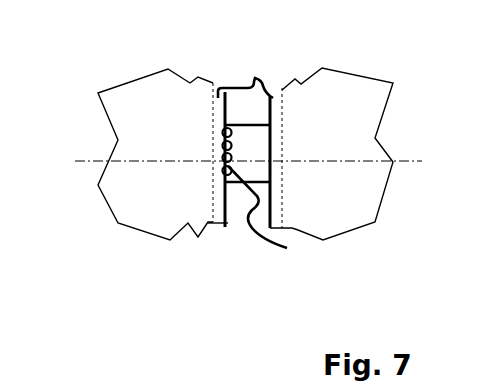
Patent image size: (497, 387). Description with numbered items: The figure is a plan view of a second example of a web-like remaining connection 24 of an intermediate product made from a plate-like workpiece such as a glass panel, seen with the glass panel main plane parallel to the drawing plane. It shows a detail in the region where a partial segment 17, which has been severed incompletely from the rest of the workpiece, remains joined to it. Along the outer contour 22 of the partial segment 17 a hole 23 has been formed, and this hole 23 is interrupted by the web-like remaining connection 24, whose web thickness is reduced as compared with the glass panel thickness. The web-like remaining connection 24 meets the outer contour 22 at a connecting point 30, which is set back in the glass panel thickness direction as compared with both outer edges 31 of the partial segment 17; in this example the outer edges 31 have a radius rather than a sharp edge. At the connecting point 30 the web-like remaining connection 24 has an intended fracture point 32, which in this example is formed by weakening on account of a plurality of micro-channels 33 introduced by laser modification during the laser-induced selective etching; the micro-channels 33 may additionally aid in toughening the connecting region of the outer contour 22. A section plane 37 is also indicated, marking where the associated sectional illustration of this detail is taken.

The partial segment 17 is at (181, 146).
The outer contour 22 is at (228, 203).
The hole 23 is at (253, 112).
The web-like remaining connection 24 is at (253, 170).
The connecting point 30 is at (289, 224).
The outer edge 31 is at (245, 70).
The intended fracture point 32 is at (289, 224).
The micro-channel 33 is at (226, 132).
The section plane 37 is at (102, 158).